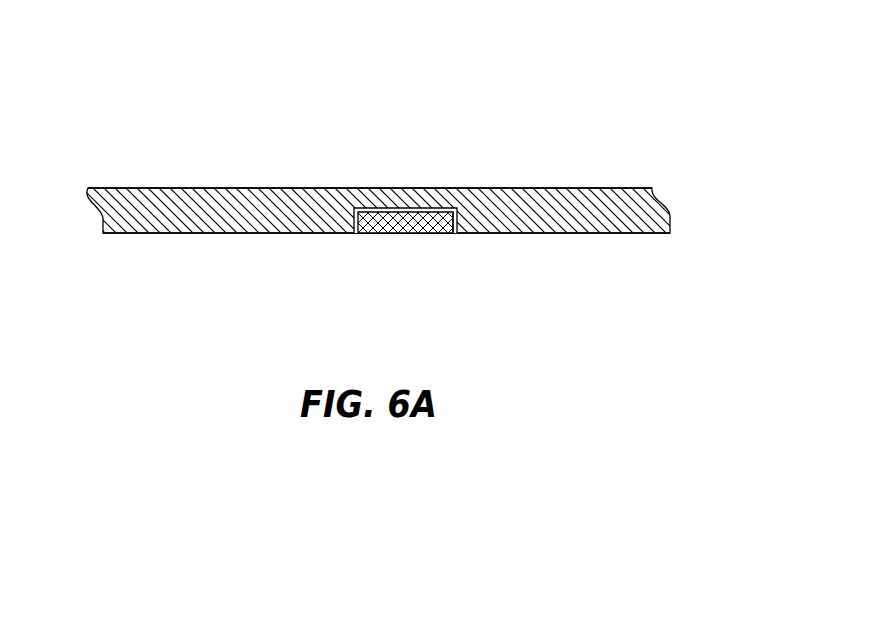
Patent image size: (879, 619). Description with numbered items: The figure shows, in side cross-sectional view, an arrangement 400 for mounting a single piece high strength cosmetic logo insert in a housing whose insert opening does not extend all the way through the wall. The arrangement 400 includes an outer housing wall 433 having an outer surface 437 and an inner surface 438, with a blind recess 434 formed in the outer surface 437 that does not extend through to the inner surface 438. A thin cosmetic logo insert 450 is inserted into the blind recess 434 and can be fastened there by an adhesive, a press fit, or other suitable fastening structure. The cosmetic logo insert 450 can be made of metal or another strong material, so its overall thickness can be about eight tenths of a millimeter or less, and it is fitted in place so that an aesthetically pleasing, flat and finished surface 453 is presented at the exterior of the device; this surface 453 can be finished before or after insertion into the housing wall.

The arrangement 400 is at (640, 79).
The outer housing wall 433 is at (100, 221).
The blind recess 434 is at (462, 233).
The outer surface 437 is at (176, 251).
The inner surface 438 is at (207, 175).
The cosmetic logo insert 450 is at (395, 213).
The finished surface 453 is at (379, 256).